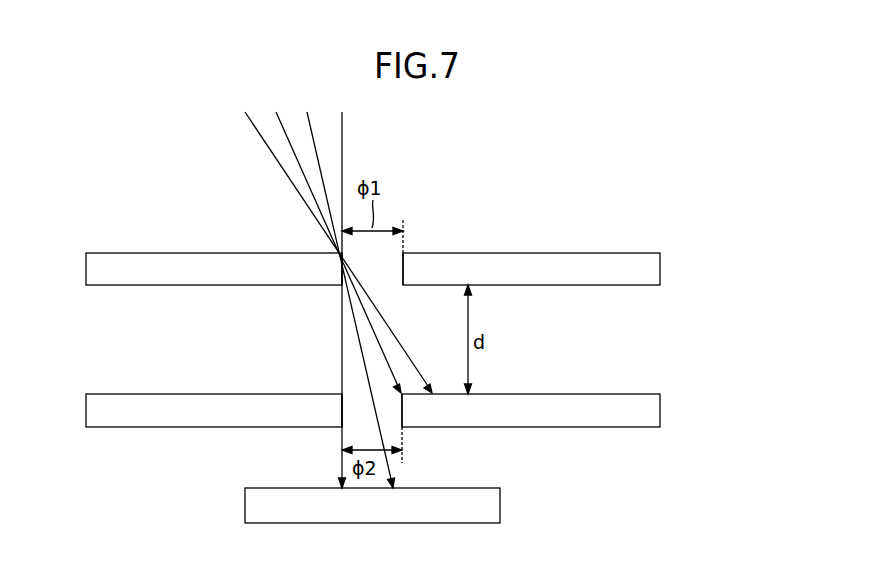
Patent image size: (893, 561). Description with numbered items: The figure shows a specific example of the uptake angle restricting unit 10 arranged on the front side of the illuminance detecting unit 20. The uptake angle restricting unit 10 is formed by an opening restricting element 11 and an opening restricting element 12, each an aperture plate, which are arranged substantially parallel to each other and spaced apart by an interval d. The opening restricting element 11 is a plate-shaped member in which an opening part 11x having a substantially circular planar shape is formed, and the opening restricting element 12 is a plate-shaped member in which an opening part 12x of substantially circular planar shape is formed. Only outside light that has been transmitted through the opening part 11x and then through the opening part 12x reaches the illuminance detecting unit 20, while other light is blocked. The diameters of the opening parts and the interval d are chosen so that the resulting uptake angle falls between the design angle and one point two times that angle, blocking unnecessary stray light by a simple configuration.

The uptake angle restricting unit 10 is at (431, 334).
The opening restricting element 11 is at (660, 269).
The opening restricting element 12 is at (403, 410).
The opening part 11x is at (385, 270).
The opening part 12x is at (383, 412).
The illuminance detecting unit 20 is at (500, 505).